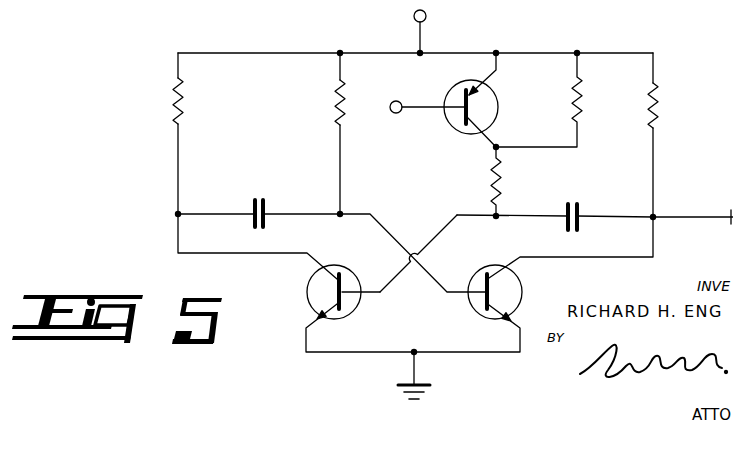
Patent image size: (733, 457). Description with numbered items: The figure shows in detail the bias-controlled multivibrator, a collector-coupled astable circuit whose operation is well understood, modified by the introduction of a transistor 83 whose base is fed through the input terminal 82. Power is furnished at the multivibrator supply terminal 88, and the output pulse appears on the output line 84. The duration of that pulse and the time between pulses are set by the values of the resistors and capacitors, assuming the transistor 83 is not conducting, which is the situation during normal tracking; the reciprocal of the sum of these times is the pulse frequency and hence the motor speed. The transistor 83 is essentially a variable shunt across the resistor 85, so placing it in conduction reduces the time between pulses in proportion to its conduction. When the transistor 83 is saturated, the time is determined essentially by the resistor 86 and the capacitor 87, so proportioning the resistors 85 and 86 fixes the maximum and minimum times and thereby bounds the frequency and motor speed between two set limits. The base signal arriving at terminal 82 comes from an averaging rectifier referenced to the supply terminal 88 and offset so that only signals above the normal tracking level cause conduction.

The input terminal 82 is at (434, 110).
The transistor 83 is at (498, 107).
The output line 84 is at (674, 217).
The resistor 85 is at (583, 102).
The resistor 86 is at (503, 182).
The capacitor 87 is at (581, 213).
The multivibrator supply terminal 88 is at (426, 16).